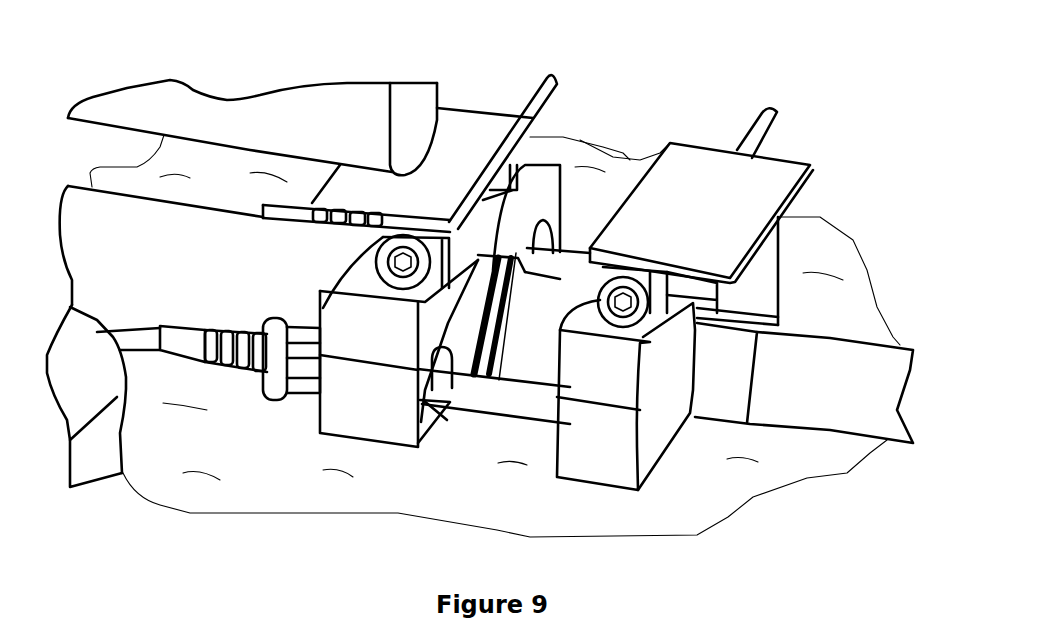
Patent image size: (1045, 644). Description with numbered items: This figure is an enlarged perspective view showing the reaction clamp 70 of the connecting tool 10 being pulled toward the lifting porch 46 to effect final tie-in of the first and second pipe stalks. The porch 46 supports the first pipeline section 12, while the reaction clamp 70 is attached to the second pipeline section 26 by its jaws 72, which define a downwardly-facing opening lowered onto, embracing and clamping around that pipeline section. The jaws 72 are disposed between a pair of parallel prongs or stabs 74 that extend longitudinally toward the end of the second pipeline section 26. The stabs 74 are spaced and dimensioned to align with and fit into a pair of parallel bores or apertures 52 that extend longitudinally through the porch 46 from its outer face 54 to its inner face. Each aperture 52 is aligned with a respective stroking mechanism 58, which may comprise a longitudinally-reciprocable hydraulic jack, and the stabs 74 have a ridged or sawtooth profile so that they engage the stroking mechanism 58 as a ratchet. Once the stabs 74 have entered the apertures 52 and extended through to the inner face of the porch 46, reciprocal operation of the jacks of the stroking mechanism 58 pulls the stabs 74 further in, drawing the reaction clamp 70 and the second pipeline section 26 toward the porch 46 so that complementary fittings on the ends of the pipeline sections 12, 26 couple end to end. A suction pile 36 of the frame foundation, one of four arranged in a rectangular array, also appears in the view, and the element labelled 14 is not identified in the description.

The connecting tool 10 is at (76, 56).
The first pipeline section 12 is at (235, 230).
The base plate 14 is at (298, 495).
The second pipeline section 26 is at (898, 357).
The suction pile 36 is at (72, 335).
The lifting porch 46 is at (387, 423).
The aperture 52 is at (553, 245).
The outer face 54 is at (452, 310).
The stroking mechanism 58 is at (272, 395).
The reaction clamp 70 is at (597, 453).
The jaws of the reaction clamp 72 is at (782, 318).
The stab 74 is at (487, 400).